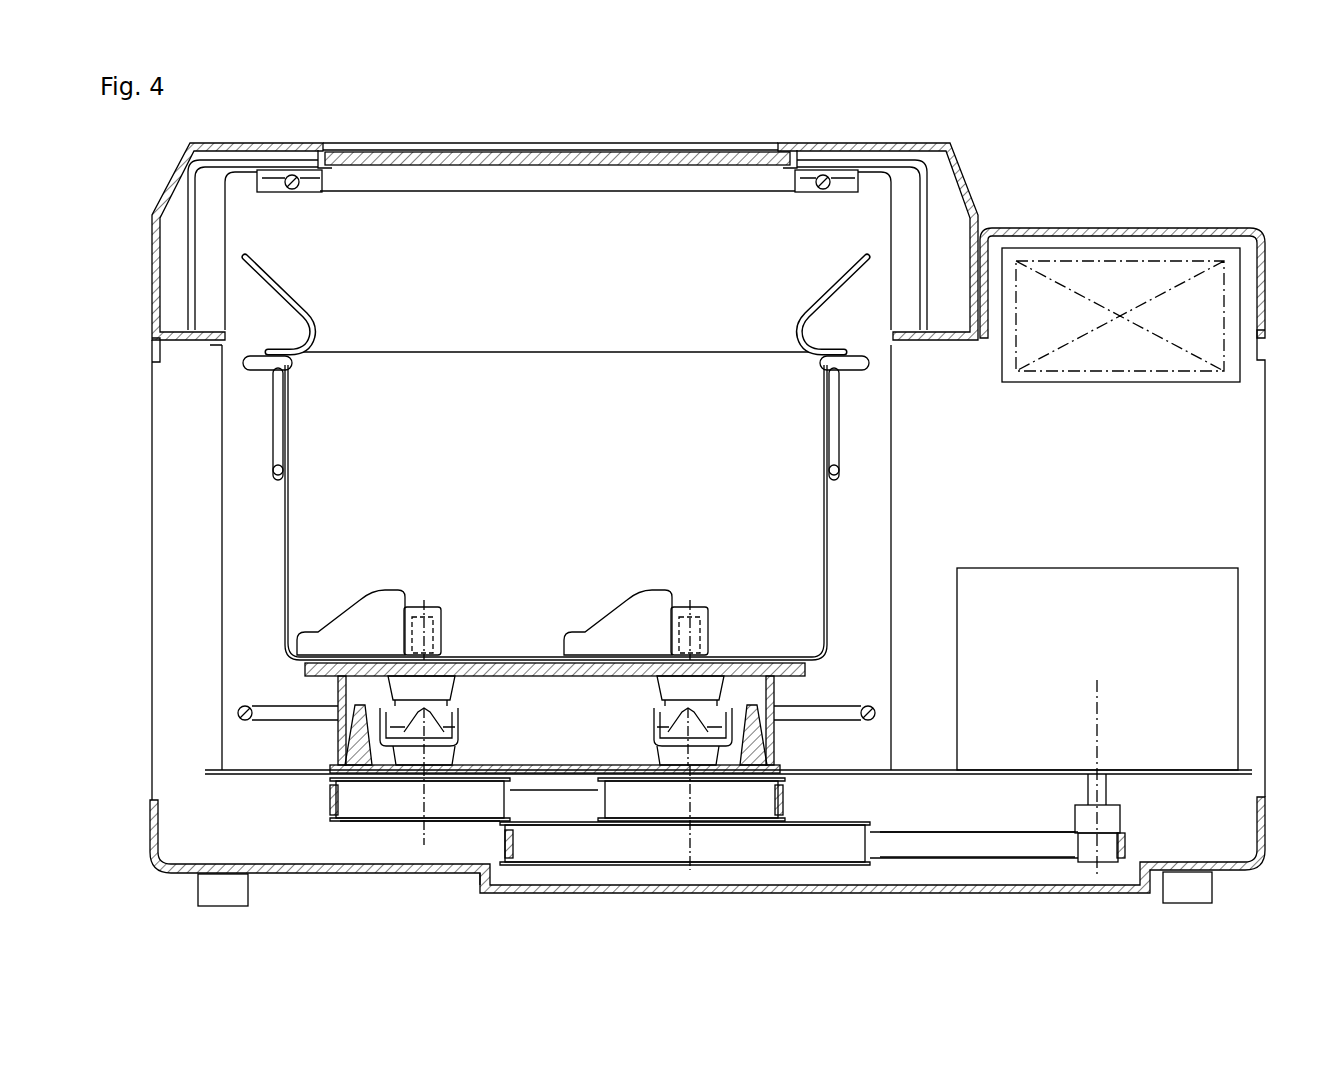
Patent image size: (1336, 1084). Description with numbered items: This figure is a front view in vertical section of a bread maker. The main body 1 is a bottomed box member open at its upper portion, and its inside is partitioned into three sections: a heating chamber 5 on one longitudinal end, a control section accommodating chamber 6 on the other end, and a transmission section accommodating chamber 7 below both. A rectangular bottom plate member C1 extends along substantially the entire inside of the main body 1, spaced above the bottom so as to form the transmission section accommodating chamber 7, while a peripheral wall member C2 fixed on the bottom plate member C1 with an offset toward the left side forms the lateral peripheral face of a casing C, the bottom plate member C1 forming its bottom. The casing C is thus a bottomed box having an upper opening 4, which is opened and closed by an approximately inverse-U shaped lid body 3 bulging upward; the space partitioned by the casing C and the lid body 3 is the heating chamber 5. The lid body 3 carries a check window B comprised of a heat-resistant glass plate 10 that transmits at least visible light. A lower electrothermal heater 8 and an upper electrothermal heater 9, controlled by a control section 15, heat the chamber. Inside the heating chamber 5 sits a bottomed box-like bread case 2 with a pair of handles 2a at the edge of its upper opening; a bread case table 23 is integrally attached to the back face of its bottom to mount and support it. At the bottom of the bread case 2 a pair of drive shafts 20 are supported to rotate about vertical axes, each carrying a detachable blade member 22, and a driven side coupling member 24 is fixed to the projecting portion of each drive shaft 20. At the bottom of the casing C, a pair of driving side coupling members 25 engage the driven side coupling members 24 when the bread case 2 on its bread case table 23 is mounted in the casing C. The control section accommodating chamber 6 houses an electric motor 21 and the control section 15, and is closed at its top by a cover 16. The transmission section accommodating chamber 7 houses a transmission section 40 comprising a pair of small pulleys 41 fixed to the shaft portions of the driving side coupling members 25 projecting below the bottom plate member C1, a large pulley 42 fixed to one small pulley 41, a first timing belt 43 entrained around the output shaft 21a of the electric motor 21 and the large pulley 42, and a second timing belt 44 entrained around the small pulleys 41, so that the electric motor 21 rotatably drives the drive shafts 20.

The main body 1 is at (1272, 632).
The bread case 2 is at (282, 560).
The handle 2a is at (296, 303).
The lid body 3 is at (792, 138).
The upper opening 4 is at (245, 334).
The heating chamber 5 is at (621, 237).
The control section accommodating chamber 6 is at (1216, 478).
The transmission section accommodating chamber 7 is at (366, 826).
The lower electrothermal heater 8 is at (255, 705).
The upper electrothermal heater 9 is at (292, 195).
The heat-resistant glass plate 10 is at (533, 152).
The control section 15 is at (1160, 270).
The cover 16 is at (1215, 228).
The drive shaft 20 is at (432, 622).
The electric motor 21 is at (1076, 568).
The output shaft 21a is at (1106, 790).
The blade member 22 is at (370, 606).
The bread case table 23 is at (800, 668).
The driven side coupling member 24 is at (446, 688).
The driving side coupling member 25 is at (452, 740).
The transmission section 40 is at (482, 845).
The small pulley 41 is at (480, 795).
The large pulley 42 is at (815, 840).
The first timing belt 43 is at (1040, 845).
The second timing belt 44 is at (552, 795).
The check window B is at (410, 138).
The casing C is at (220, 606).
The bottom plate member C1 is at (250, 780).
The peripheral wall member C2 is at (222, 728).